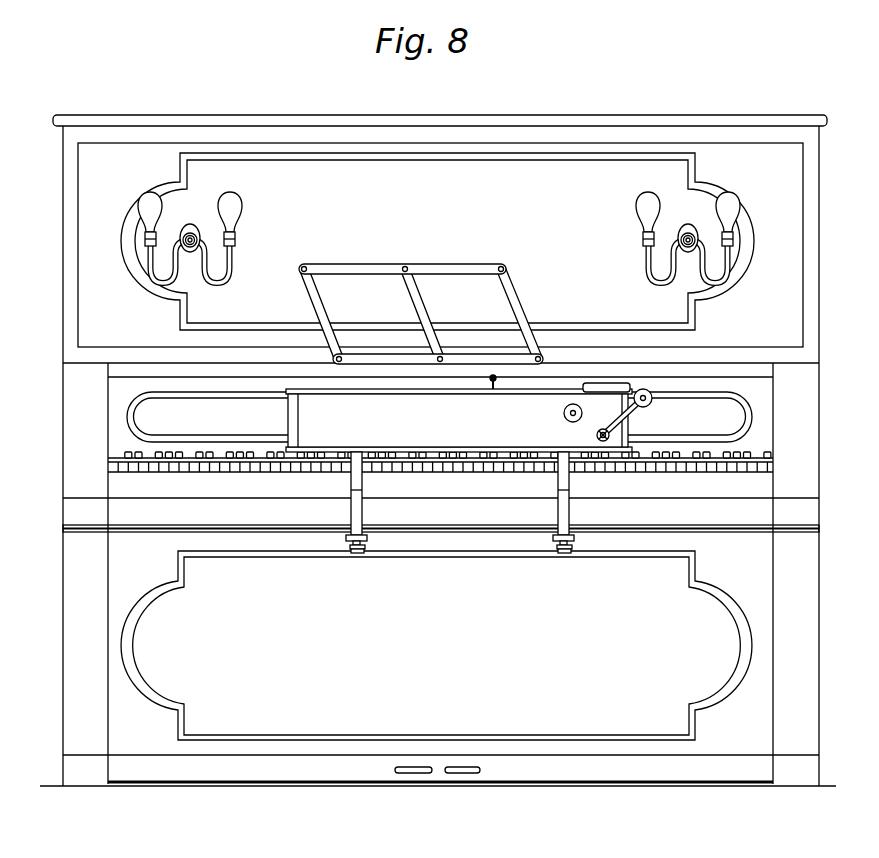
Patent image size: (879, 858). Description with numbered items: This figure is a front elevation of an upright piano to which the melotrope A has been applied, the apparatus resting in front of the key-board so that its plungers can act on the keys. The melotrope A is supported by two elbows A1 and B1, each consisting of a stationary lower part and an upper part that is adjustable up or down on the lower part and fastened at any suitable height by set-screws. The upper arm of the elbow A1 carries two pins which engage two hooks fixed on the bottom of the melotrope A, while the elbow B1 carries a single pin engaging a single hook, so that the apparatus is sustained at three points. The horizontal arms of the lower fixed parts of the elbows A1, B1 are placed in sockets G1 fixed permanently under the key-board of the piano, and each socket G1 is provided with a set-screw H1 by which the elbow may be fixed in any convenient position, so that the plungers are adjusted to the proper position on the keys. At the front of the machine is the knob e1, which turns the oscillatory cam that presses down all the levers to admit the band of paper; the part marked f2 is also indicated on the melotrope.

The melotrope A is at (469, 417).
The elbow A1 is at (348, 493).
The elbow B1 is at (575, 493).
The socket G1 is at (470, 540).
The set-screw H1 is at (459, 558).
The knob e1 is at (566, 416).
The adjusting pin f2 is at (501, 378).